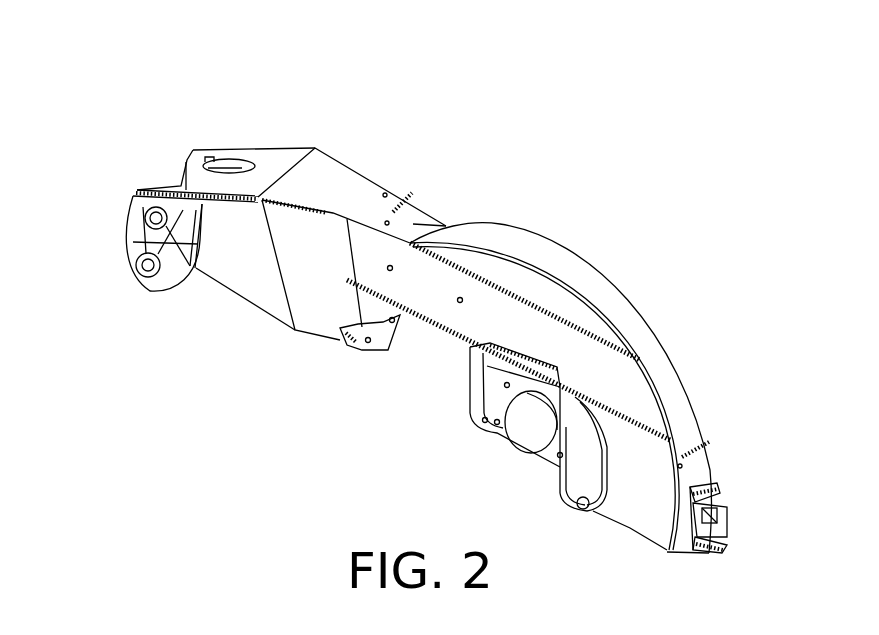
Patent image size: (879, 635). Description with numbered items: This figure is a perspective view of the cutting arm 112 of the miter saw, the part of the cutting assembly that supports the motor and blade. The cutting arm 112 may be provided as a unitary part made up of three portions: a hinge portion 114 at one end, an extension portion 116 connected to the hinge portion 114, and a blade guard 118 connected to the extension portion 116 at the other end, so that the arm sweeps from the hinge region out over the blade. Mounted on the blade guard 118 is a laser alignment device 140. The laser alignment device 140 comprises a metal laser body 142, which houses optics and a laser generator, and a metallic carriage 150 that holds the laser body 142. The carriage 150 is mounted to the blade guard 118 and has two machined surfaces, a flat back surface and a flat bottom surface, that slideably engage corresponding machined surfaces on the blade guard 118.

The cutting arm 112 is at (453, 198).
The hinge portion 114 is at (127, 230).
The extension portion 116 is at (345, 167).
The blade guard 118 is at (620, 307).
The laser alignment device 140 is at (730, 550).
The laser body 142 is at (724, 512).
The carriage 150 is at (677, 533).